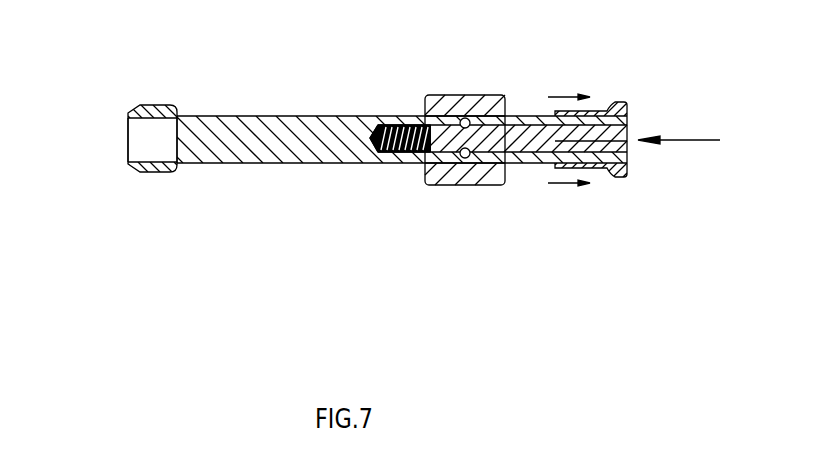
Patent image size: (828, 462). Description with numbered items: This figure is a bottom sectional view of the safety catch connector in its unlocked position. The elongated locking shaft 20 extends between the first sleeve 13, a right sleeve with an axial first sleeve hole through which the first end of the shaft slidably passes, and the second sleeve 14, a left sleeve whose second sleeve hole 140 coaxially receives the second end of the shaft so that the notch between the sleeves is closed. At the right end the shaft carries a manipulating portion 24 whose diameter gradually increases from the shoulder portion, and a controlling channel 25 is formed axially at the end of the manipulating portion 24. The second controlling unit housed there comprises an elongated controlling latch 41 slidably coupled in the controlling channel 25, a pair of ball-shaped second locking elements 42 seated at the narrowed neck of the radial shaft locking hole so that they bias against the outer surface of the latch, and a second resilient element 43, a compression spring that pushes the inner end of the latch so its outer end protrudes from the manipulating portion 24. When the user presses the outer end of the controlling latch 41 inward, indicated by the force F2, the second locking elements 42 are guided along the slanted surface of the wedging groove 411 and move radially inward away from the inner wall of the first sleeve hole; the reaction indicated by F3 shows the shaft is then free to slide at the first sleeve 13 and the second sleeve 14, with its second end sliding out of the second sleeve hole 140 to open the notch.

The first sleeve 13 is at (503, 95).
The second sleeve 14 is at (153, 172).
The second sleeve hole 140 is at (138, 160).
The locking shaft 20 is at (288, 115).
The manipulating portion 24 is at (608, 105).
The controlling channel 25 is at (596, 142).
The controlling latch 41 is at (628, 140).
The wedging groove 411 is at (460, 118).
The second locking element 42 is at (468, 95).
The second resilient element 43 is at (401, 152).
The pushing force F2 is at (682, 128).
The reaction force F3 is at (569, 142).